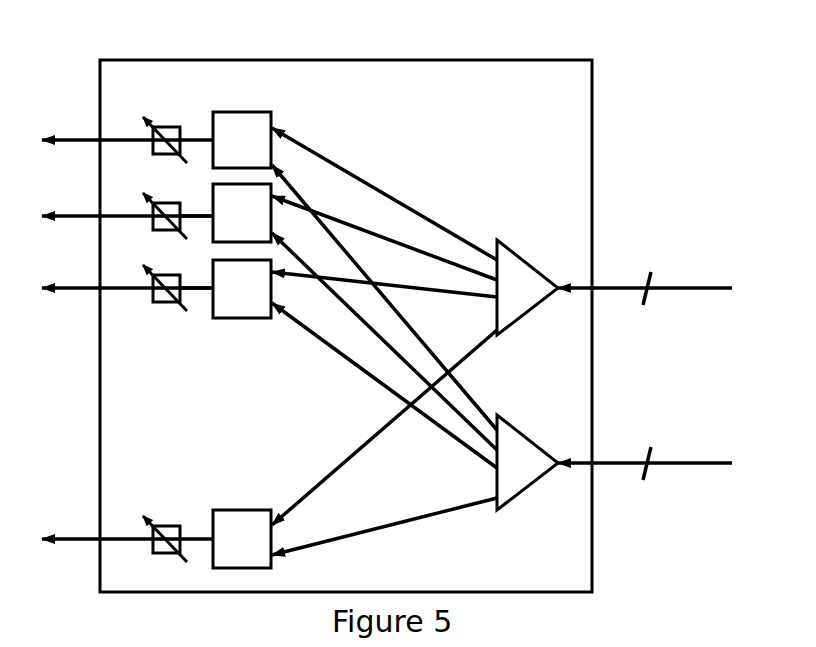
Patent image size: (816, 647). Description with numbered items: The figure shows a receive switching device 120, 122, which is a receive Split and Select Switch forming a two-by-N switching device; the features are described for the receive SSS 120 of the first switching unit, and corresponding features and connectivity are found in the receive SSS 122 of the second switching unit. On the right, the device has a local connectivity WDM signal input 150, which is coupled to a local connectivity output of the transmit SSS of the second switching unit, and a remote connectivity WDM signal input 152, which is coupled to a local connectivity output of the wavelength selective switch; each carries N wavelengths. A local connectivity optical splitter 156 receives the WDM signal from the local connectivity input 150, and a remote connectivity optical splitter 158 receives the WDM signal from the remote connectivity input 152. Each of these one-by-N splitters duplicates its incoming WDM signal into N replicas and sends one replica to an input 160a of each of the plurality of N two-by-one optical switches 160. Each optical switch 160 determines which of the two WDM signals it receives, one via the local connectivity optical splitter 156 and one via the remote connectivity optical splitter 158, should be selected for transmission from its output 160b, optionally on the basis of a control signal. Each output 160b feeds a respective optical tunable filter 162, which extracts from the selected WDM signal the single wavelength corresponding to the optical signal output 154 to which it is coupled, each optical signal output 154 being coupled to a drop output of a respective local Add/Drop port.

The receive switching device 120 is at (398, 326).
The receive switching device 122 is at (593, 142).
The local connectivity WDM signal input 150 is at (593, 287).
The remote connectivity WDM signal input 152 is at (593, 462).
The optical signal outputs 154 is at (73, 88).
The local connectivity optical splitter 156 is at (525, 310).
The remote connectivity optical splitter 158 is at (523, 490).
The optical switches 160 is at (245, 80).
The input of optical switch 160a is at (274, 158).
The output of optical switch 160b is at (212, 222).
The optical tunable filters 162 is at (168, 118).